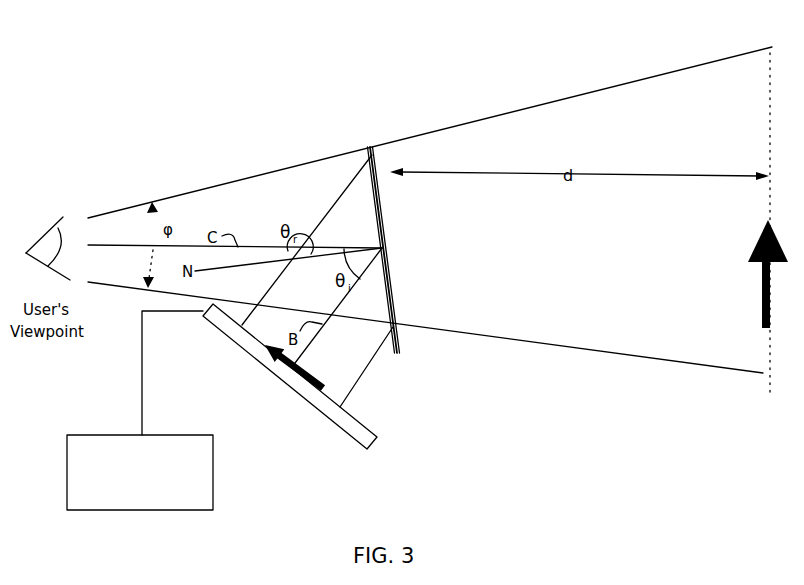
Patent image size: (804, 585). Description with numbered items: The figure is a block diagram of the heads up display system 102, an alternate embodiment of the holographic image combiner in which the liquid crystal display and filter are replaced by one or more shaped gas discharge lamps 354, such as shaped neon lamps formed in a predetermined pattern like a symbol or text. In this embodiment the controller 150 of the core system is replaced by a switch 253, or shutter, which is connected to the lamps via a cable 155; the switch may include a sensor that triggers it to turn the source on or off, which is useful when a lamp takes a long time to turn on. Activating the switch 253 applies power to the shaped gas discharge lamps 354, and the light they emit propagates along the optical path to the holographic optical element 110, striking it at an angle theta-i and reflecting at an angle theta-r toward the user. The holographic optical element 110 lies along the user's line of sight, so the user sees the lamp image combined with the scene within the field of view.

The heads up display system 102 is at (148, 176).
The holographic optical element 110 is at (398, 284).
The controller 150 is at (763, 291).
The cable 155 is at (142, 374).
The switch 253 is at (181, 484).
The shaped gas discharge lamps 354 is at (378, 432).